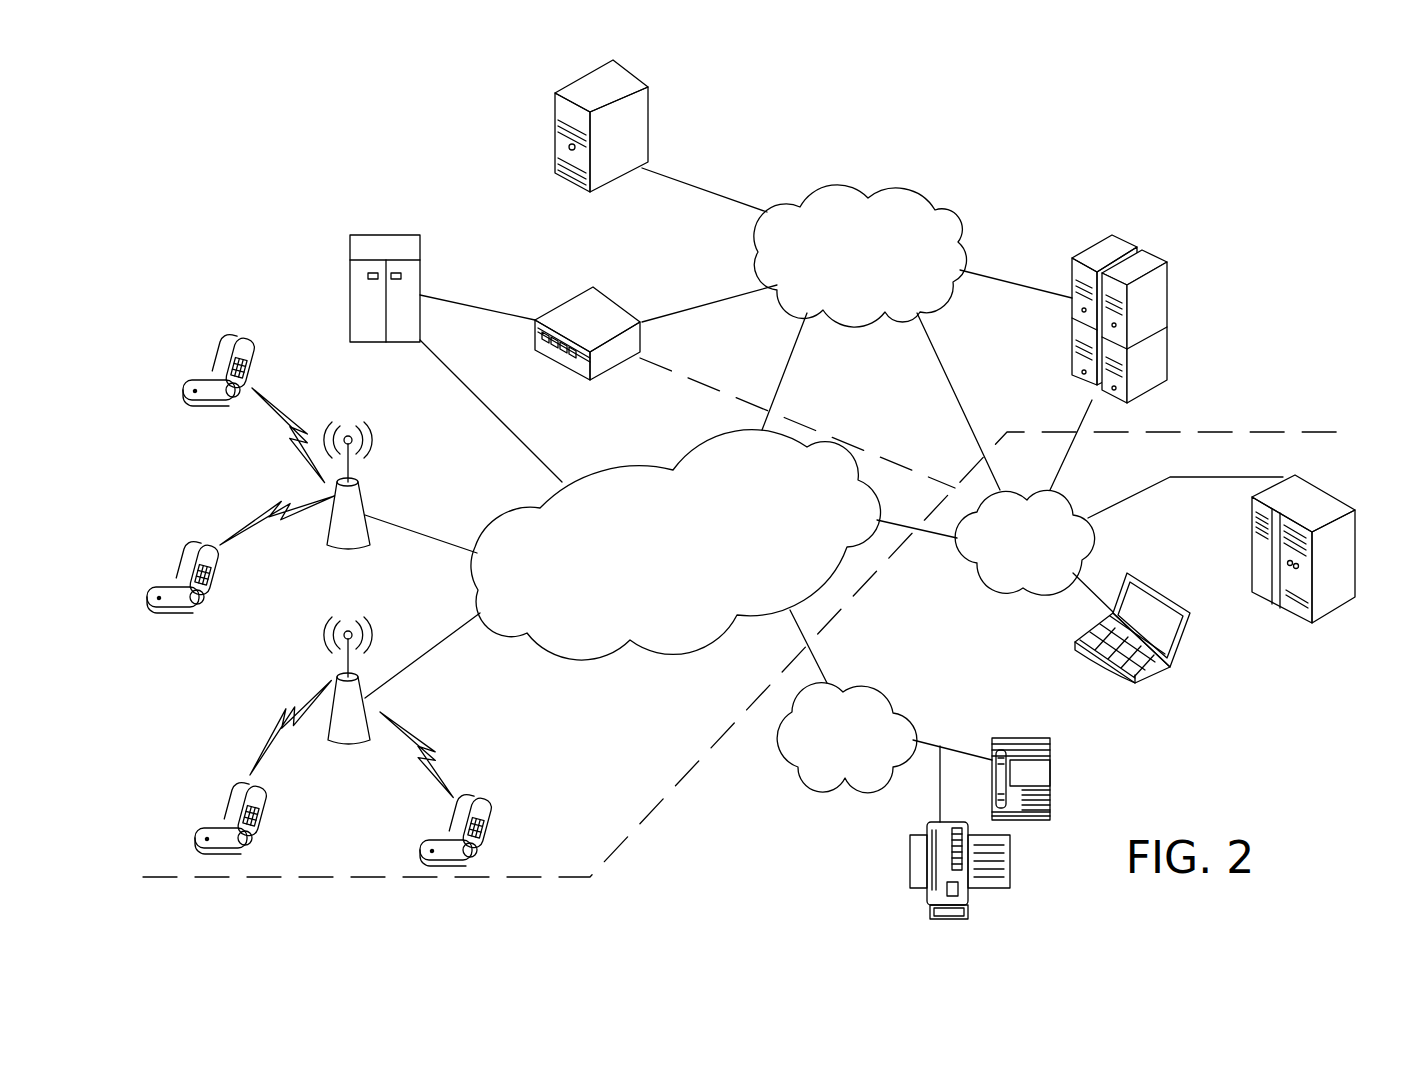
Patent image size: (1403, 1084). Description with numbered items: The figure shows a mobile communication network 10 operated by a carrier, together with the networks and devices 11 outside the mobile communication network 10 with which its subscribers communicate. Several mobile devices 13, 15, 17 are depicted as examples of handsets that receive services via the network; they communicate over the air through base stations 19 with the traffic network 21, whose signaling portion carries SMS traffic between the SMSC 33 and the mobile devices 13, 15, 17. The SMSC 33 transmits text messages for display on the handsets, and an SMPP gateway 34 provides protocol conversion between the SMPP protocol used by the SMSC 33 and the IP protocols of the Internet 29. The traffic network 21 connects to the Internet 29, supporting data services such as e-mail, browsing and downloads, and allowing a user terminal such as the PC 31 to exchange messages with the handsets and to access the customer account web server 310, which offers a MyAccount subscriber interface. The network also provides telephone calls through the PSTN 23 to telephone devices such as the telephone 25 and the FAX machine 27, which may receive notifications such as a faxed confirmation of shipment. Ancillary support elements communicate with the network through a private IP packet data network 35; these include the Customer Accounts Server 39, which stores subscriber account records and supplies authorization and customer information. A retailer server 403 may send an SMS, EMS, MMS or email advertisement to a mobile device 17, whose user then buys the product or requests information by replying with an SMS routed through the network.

The mobile communication network 10 is at (304, 140).
The networks and devices outside the mobile communication network 11 is at (740, 617).
The mobile device 13 is at (218, 352).
The mobile device 15 is at (210, 825).
The mobile device 17 is at (488, 802).
The base station 19 is at (355, 480).
The traffic network 21 is at (650, 650).
The public switched telephone network (PSTN) 23 is at (800, 778).
The telephone 25 is at (1052, 760).
The FAX machine 27 is at (910, 860).
The Internet 29 is at (970, 565).
The personal computer (PC) 31 is at (1160, 590).
The SMSC 33 is at (350, 290).
The SMPP gateway 34 is at (575, 295).
The private IP packet data network 35 is at (752, 265).
The Customer Accounts Server (CAS) 39 is at (548, 135).
The customer account web server 310 is at (1135, 262).
The retailer server 403 is at (1320, 490).